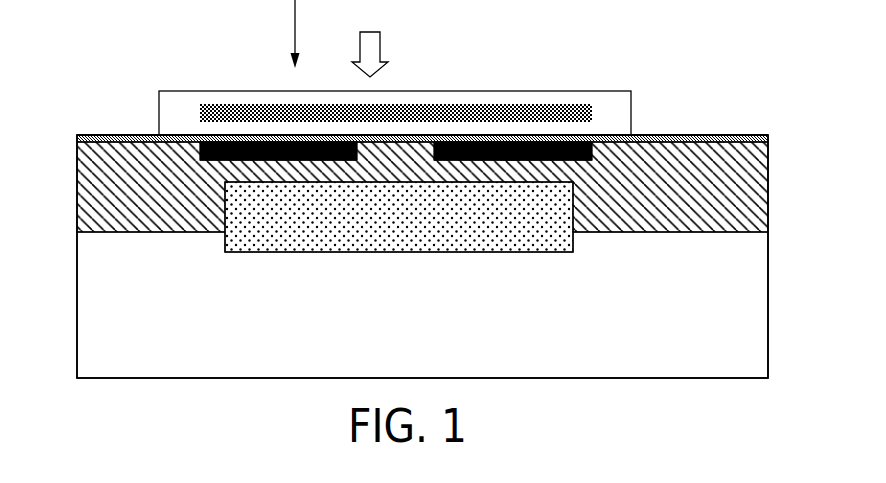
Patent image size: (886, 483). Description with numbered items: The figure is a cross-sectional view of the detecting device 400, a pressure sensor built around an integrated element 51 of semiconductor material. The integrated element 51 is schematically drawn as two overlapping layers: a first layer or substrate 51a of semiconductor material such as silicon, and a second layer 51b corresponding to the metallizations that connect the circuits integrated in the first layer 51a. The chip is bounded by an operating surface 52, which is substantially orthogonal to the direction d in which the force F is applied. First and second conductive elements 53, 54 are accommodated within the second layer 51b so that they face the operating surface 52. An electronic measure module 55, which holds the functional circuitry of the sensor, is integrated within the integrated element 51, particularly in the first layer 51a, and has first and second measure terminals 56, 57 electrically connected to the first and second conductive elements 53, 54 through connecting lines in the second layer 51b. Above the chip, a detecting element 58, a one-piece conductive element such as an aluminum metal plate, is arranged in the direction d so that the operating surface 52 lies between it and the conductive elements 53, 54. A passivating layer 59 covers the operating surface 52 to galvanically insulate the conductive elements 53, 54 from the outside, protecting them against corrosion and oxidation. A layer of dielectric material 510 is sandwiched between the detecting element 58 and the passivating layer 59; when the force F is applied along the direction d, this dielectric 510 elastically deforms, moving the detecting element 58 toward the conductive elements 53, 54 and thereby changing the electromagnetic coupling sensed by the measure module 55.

The detecting device 400 is at (152, 397).
The integrated element 51 is at (778, 287).
The first layer 51a is at (107, 292).
The second layer 51b is at (92, 215).
The operating surface 52 is at (660, 158).
The first conductive element 53 is at (207, 142).
The second conductive element 54 is at (557, 140).
The electronic measure module 55 is at (480, 237).
The first measure terminal 56 is at (280, 160).
The second measure terminal 57 is at (510, 160).
The detecting element 58 is at (493, 110).
The passivating layer 59 is at (737, 133).
The layer of dielectric material 510 is at (168, 107).
The direction d is at (291, 31).
The force F is at (382, 44).